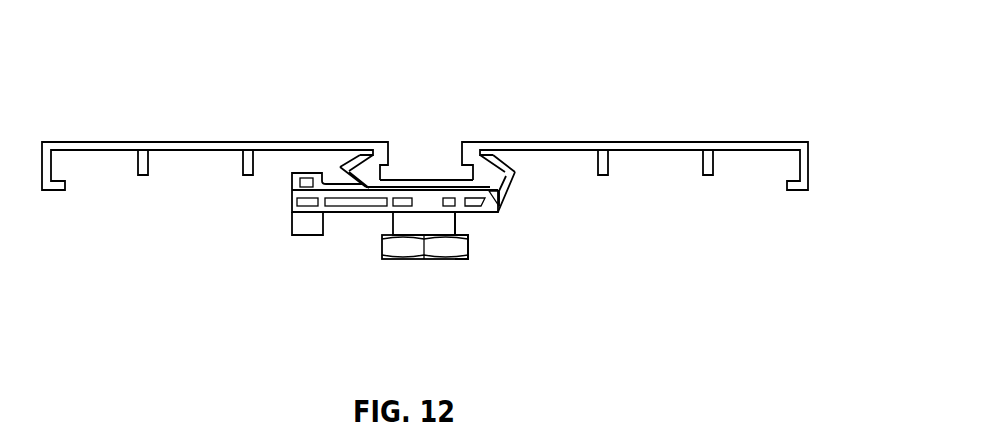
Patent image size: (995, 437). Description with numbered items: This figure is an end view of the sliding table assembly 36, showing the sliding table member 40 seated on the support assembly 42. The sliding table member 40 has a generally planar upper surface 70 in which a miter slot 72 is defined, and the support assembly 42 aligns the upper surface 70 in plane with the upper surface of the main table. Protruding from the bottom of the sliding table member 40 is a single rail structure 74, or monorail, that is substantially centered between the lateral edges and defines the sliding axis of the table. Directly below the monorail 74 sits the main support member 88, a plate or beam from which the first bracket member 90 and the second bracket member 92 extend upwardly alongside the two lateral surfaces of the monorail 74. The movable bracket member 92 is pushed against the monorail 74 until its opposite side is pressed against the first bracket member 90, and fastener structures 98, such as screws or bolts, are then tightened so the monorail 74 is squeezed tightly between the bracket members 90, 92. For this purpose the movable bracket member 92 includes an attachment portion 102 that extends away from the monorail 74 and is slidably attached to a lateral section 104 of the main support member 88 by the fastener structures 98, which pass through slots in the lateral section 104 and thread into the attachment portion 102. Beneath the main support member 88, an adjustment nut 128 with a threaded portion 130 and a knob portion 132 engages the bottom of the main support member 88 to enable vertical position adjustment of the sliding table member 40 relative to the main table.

The sliding table assembly 36 is at (157, 82).
The sliding table member 40 is at (547, 122).
The upper surface 70 is at (693, 141).
The miter slot 72 is at (423, 155).
The second bracket member 92 is at (336, 167).
The first bracket member 90 is at (514, 176).
The rail structure 74 is at (363, 182).
The attachment portion 102 is at (291, 179).
The lateral section 104 is at (292, 203).
The main support member 88 is at (356, 198).
The fastener structures 98 is at (304, 226).
The threaded portion 130 is at (458, 222).
The knob portion 132 is at (405, 260).
The adjustment nuts 128 is at (458, 268).
The support assembly 42 is at (510, 244).